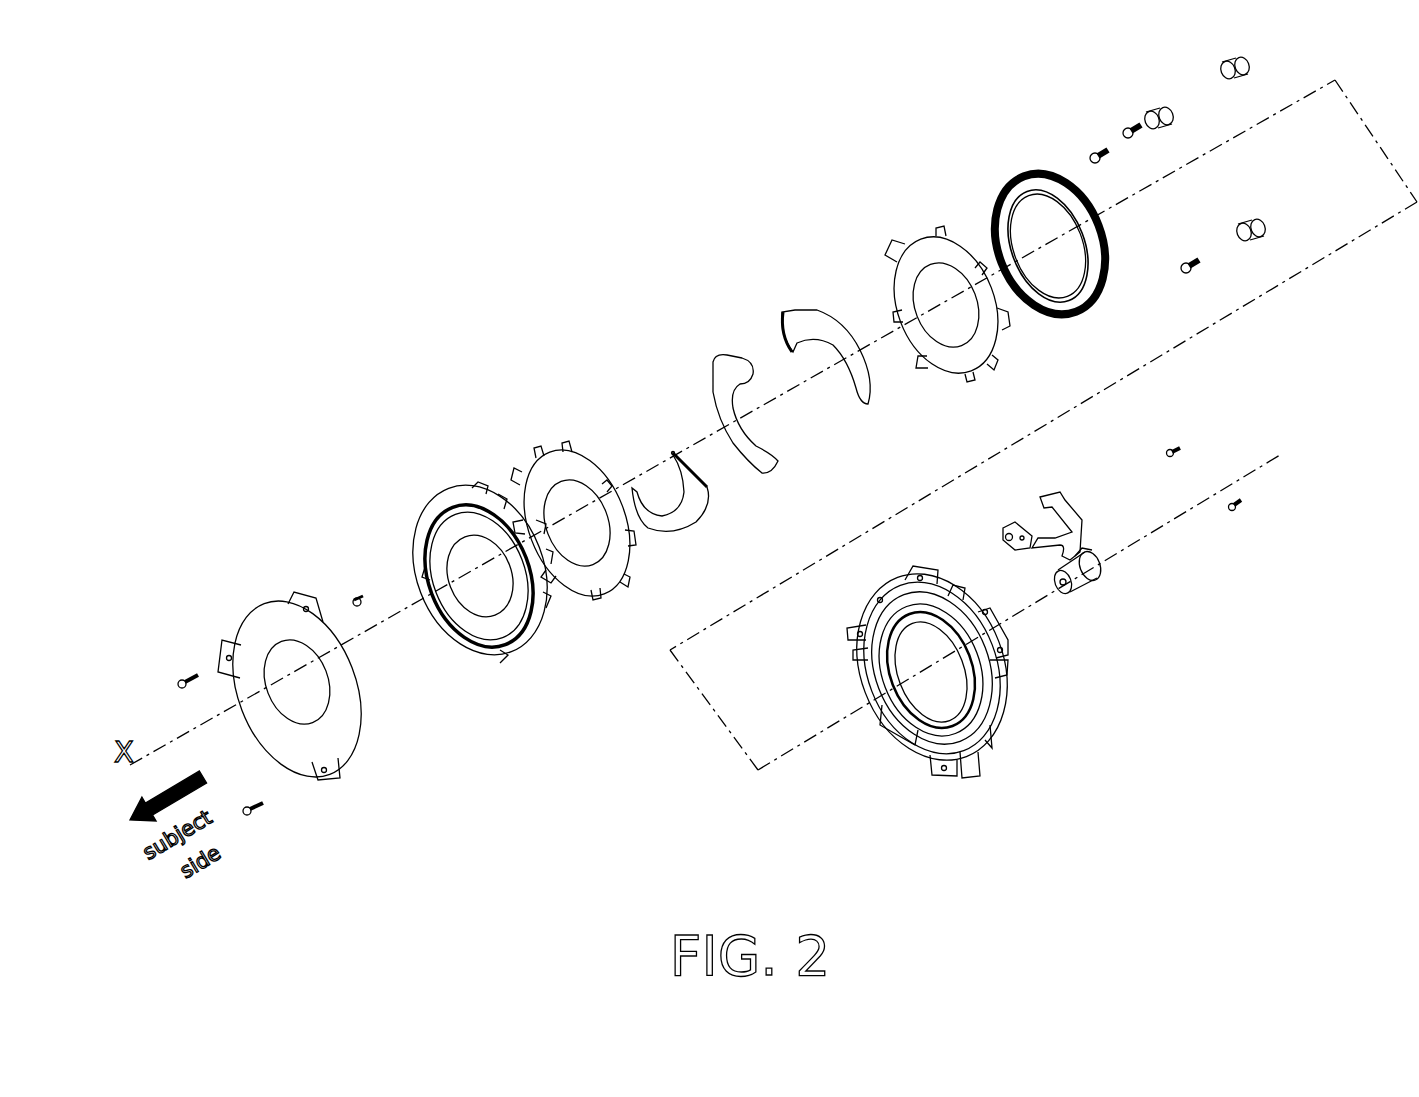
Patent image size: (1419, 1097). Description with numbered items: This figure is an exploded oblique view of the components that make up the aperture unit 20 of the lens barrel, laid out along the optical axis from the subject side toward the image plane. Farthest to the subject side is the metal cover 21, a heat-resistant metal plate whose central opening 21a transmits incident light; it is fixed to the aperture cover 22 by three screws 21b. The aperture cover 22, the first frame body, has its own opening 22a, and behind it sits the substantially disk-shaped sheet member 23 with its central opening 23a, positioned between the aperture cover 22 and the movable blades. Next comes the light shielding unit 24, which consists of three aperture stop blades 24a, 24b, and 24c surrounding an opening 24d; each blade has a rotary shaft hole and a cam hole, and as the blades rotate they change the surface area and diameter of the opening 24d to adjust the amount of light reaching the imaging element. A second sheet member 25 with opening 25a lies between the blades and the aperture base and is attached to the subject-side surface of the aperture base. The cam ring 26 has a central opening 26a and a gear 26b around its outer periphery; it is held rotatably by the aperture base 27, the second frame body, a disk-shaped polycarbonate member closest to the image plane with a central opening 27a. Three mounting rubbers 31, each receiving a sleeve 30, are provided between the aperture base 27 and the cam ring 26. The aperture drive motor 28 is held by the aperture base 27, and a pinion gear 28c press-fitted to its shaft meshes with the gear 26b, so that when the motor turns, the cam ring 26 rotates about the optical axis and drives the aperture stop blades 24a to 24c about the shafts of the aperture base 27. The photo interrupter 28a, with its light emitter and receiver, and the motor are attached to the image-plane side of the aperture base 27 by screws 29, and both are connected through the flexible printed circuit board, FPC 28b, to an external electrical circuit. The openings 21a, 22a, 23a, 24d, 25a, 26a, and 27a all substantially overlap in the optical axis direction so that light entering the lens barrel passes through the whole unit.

The aperture unit 20 is at (362, 205).
The metal cover 21 is at (257, 618).
The opening 21a is at (283, 658).
The screws 21b is at (193, 681).
The aperture cover 22 is at (437, 512).
The opening 22a is at (457, 560).
The sheet member 23 is at (537, 473).
The opening 23a is at (563, 512).
The light shielding unit 24 is at (757, 195).
The aperture stop blade 24a is at (655, 480).
The aperture stop blade 24b is at (720, 378).
The aperture stop blade 24c is at (797, 313).
The opening 24d is at (817, 361).
The sheet member 25 is at (903, 260).
The opening 25a is at (937, 288).
The cam ring 26 is at (1017, 193).
The opening 26a is at (1023, 222).
The gear 26b is at (1083, 207).
The aperture base 27 is at (883, 583).
The opening 27a is at (913, 663).
The aperture drive motor 28 is at (1093, 580).
The photo interrupter 28a is at (1010, 525).
The FPC 28b is at (1053, 498).
The pinion gear 28c is at (1067, 582).
The screws 29 is at (1175, 455).
The sleeve 30 is at (1133, 140).
The mounting rubbers 31 is at (1168, 130).